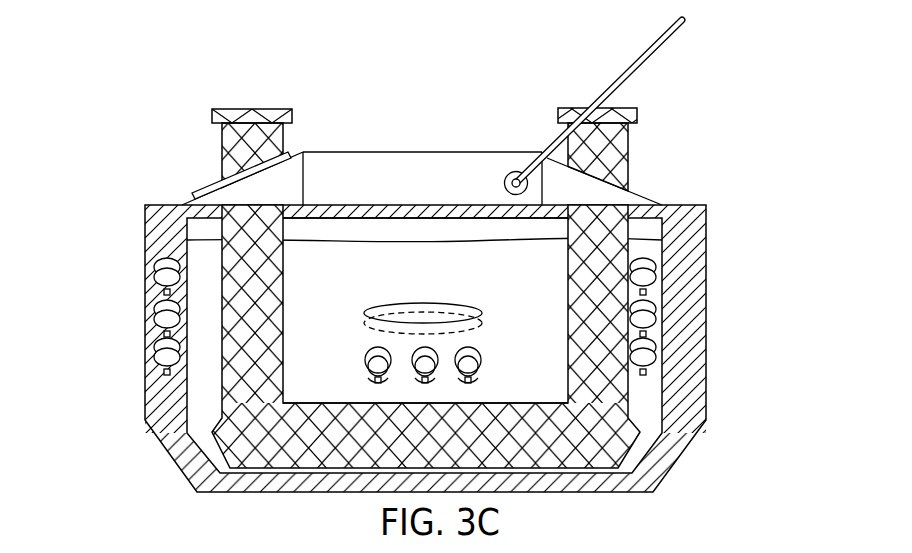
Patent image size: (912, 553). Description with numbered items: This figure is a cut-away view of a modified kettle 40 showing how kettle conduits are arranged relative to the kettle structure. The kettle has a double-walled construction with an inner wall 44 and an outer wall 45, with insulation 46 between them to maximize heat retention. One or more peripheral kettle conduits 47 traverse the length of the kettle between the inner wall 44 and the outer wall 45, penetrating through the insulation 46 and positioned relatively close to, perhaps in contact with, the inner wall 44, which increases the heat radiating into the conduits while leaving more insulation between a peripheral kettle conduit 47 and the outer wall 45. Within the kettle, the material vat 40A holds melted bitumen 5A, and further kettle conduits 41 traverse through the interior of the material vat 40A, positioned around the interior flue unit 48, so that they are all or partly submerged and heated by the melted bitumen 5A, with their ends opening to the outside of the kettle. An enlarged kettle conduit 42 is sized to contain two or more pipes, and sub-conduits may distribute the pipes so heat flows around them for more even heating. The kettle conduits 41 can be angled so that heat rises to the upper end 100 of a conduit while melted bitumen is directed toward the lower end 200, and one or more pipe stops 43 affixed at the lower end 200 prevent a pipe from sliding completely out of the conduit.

The modified kettle 40 is at (720, 138).
The material vat 40A is at (413, 263).
The melted bitumen 5A is at (346, 240).
The kettle conduit 41 is at (367, 352).
The enlarged kettle conduit 42 is at (457, 303).
The pipe stop 43 is at (153, 330).
The inner wall 44 is at (663, 310).
The outer wall 45 is at (707, 405).
The insulation 46 is at (687, 288).
The peripheral kettle conduit 47 is at (163, 262).
The interior flue unit 48 is at (268, 322).
The upper end 100 is at (447, 286).
The lower end 200 is at (157, 290).